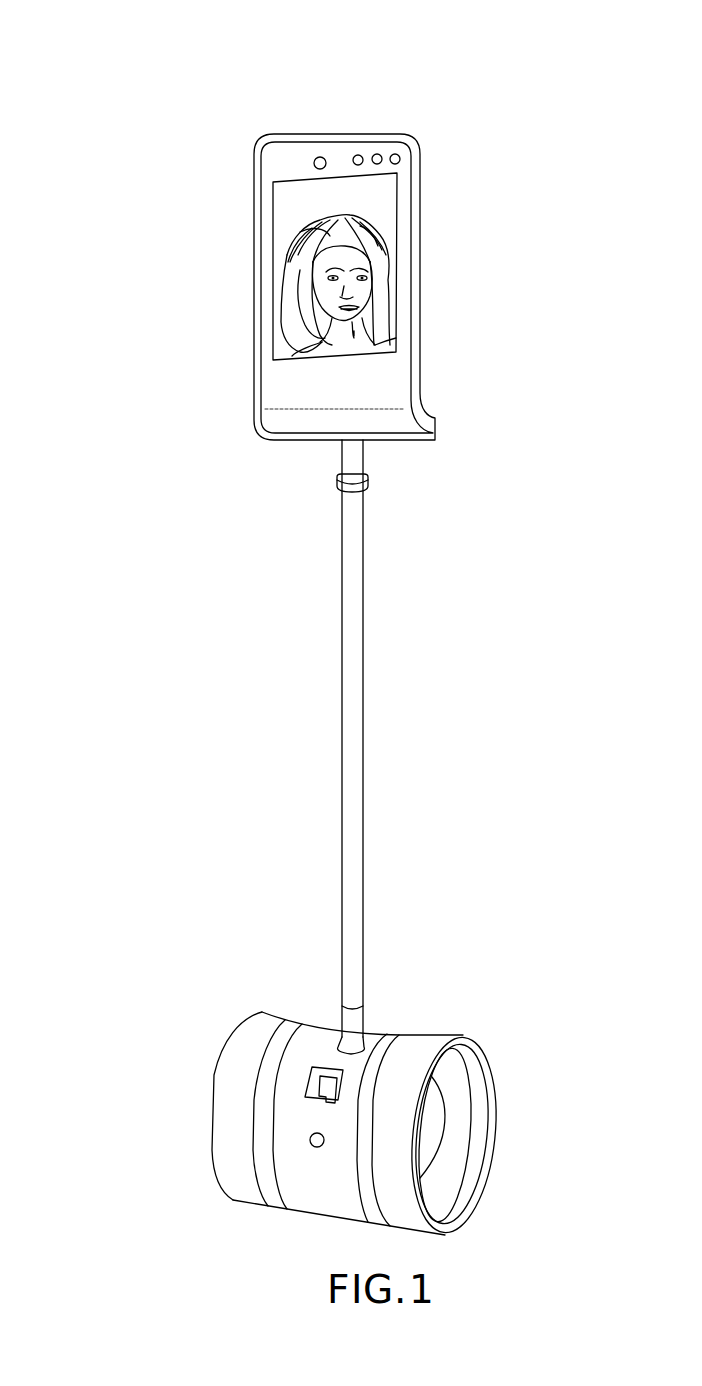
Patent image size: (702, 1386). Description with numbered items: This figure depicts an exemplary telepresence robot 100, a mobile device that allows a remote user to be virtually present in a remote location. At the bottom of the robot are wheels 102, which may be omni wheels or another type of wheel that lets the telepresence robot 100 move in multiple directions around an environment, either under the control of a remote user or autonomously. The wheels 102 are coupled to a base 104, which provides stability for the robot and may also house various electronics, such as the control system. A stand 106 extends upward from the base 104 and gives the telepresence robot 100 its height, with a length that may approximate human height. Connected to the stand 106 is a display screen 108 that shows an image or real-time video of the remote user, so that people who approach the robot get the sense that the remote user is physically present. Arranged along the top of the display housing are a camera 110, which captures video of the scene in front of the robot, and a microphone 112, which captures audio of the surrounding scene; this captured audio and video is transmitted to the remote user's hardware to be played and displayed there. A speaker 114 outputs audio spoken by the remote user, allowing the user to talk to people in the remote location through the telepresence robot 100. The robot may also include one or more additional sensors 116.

The telepresence robot 100 is at (144, 79).
The wheels 102 is at (475, 1157).
The base 104 is at (371, 1048).
The stand 106 is at (357, 663).
The display screen 108 is at (277, 208).
The camera 110 is at (315, 157).
The microphone 112 is at (355, 155).
The speaker 114 is at (381, 154).
The additional sensors 116 is at (400, 159).